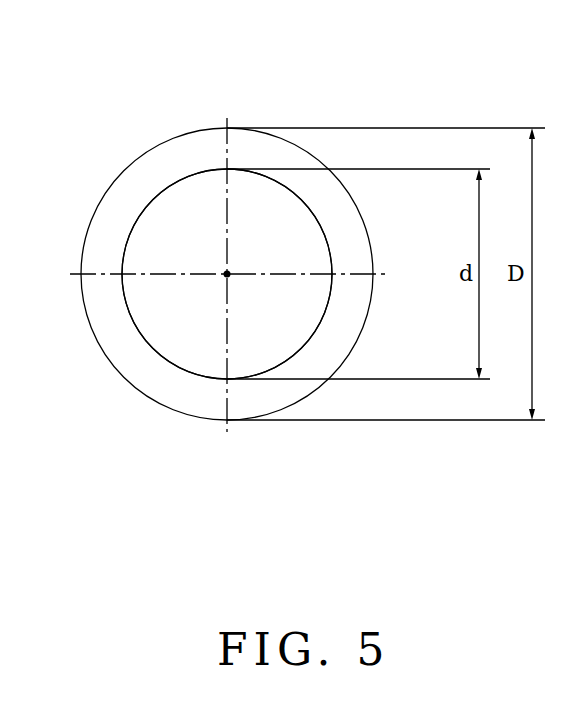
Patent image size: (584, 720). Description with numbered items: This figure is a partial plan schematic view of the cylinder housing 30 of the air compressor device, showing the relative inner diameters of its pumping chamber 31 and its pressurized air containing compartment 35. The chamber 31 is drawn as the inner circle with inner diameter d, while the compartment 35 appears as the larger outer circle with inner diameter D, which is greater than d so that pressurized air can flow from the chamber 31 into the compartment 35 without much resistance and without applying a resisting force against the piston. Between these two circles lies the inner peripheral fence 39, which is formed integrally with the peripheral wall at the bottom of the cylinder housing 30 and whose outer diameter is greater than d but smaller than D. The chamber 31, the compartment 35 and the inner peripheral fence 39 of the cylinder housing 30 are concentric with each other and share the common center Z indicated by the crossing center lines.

The cylinder housing 30 is at (210, 247).
The chamber 31 is at (186, 179).
The compartment 35 is at (139, 384).
The inner peripheral fence 39 is at (142, 210).